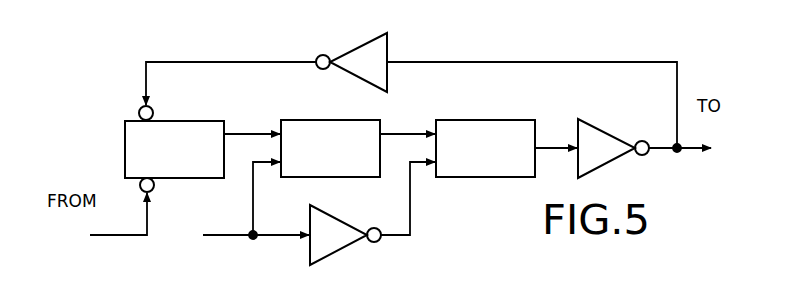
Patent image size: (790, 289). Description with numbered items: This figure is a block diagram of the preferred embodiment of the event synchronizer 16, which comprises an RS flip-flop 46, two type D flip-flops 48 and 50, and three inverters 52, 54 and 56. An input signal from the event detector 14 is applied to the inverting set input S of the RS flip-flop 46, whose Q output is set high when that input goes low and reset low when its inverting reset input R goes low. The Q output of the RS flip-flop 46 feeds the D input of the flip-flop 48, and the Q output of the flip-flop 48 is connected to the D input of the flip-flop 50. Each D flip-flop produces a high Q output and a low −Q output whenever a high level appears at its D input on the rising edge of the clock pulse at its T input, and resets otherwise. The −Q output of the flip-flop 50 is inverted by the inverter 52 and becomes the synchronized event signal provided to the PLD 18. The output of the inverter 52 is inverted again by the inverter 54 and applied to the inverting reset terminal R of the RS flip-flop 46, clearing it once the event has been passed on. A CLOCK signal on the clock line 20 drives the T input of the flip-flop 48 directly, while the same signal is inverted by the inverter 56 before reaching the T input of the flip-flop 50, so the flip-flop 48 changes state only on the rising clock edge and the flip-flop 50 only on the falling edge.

The event synchronizer 16 is at (110, 128).
The clock line 20 is at (245, 215).
The RS flip-flop 46 is at (170, 121).
The type D flip-flop 48 is at (300, 120).
The type D flip-flop 50 is at (460, 120).
The inverter 52 is at (622, 140).
The inverter 54 is at (366, 44).
The inverter 56 is at (345, 227).
The event detector 14 is at (78, 223).
The PLD 18 is at (728, 128).